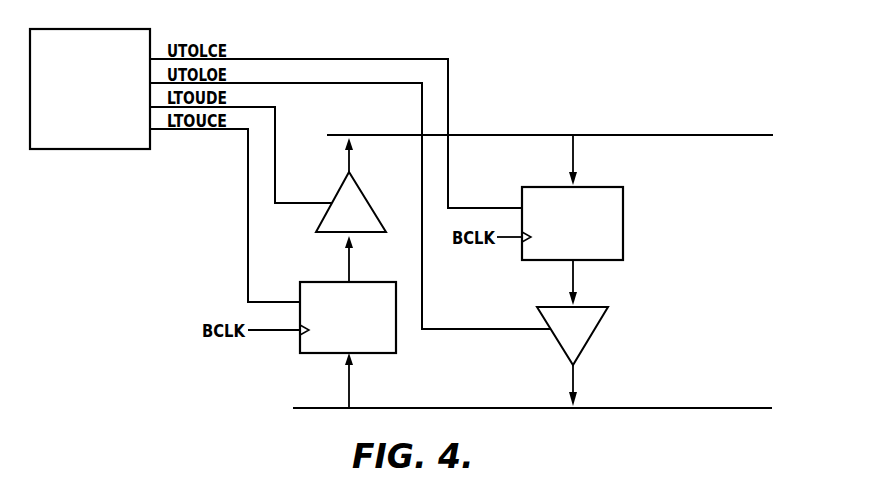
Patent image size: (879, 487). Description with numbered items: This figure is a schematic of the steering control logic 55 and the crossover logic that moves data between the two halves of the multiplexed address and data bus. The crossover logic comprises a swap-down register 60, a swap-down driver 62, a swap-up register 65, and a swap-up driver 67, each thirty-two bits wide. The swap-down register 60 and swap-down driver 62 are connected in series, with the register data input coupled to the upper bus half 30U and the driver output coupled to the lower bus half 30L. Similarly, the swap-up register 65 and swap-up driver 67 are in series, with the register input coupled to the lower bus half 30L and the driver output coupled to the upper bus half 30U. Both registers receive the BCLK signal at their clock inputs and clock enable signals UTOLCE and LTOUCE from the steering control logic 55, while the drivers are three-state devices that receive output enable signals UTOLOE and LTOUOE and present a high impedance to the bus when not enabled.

The steering control logic 55 is at (135, 29).
The upper bus half 30U is at (688, 134).
The lower bus half 30L is at (688, 407).
The swap-down register 60 is at (623, 193).
The swap-down driver 62 is at (600, 322).
The swap-up register 65 is at (372, 282).
The swap-up driver 67 is at (366, 202).